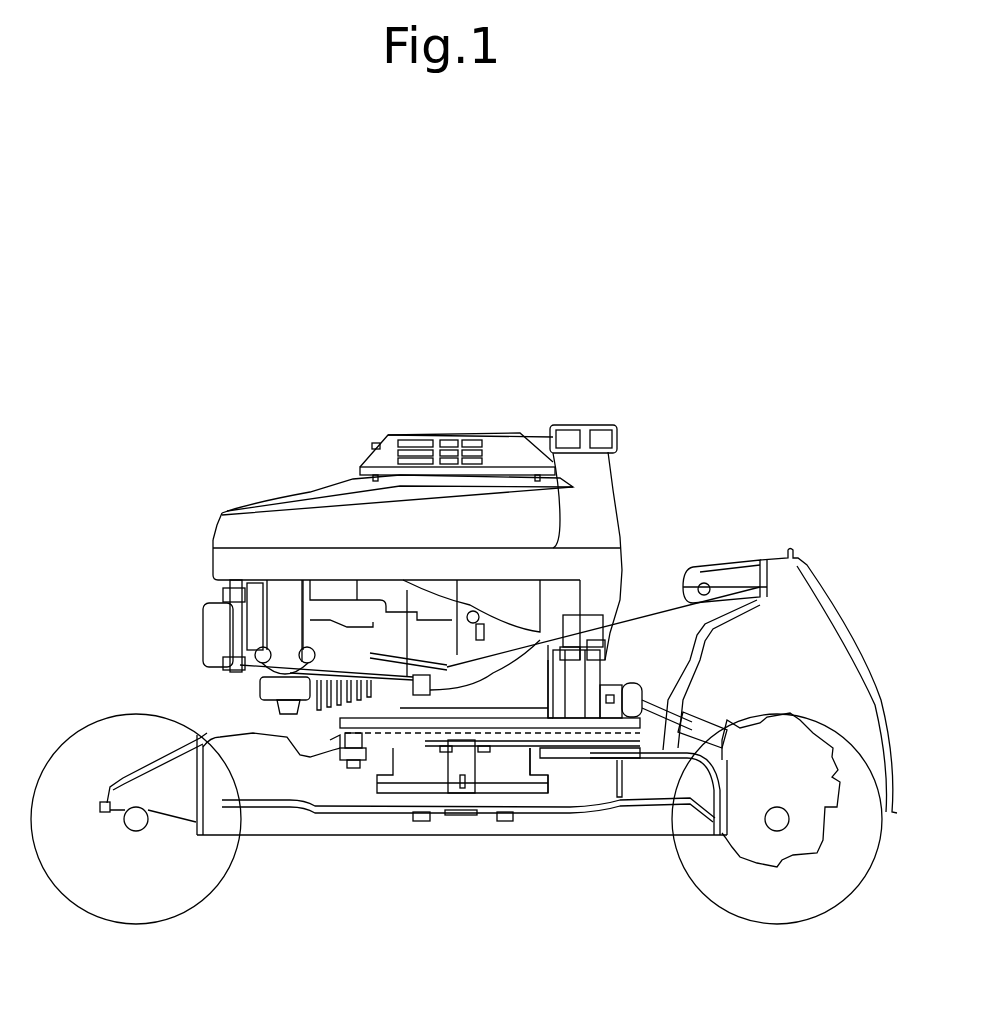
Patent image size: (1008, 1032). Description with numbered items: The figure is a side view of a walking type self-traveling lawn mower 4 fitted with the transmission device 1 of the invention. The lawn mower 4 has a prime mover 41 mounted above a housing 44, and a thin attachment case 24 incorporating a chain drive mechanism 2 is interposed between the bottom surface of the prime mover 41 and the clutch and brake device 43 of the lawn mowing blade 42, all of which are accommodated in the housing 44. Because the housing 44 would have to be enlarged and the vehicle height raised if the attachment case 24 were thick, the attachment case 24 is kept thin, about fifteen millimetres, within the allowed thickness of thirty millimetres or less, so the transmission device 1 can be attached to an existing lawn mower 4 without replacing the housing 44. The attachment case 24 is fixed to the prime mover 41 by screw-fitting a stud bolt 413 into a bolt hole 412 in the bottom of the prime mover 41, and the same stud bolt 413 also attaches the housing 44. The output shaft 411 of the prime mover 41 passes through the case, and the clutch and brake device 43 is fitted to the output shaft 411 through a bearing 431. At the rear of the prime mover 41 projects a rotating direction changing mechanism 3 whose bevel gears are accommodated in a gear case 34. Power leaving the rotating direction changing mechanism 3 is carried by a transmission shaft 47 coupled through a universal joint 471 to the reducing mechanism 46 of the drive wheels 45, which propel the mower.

The transmission device 1 is at (557, 757).
The chain drive mechanism 2 is at (489, 725).
The attachment case 24 is at (430, 731).
The rotating direction changing mechanism 3 is at (588, 692).
The gear case 34 is at (573, 690).
The lawn mower 4 is at (263, 492).
The prime mover 41 is at (383, 642).
The output shaft 411 is at (460, 793).
The bolt hole 412 is at (343, 722).
The stud bolt 413 is at (352, 768).
The lawn mowing blade 42 is at (293, 815).
The clutch and brake device 43 is at (418, 792).
The bearing 431 is at (523, 793).
The housing 44 is at (258, 833).
The drive wheels 45 is at (733, 916).
The reducing mechanism 46 is at (777, 867).
The transmission shaft 47 is at (690, 662).
The universal joint 471 is at (648, 684).